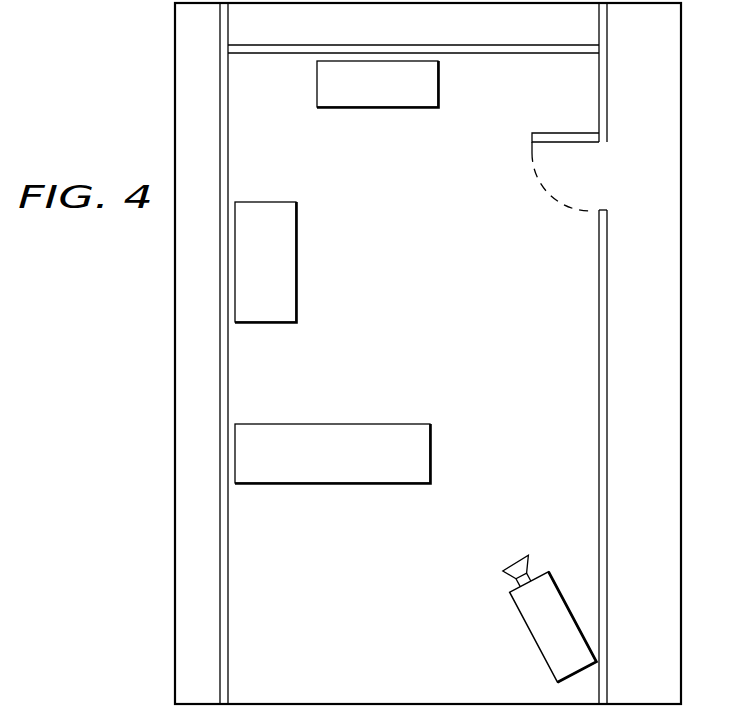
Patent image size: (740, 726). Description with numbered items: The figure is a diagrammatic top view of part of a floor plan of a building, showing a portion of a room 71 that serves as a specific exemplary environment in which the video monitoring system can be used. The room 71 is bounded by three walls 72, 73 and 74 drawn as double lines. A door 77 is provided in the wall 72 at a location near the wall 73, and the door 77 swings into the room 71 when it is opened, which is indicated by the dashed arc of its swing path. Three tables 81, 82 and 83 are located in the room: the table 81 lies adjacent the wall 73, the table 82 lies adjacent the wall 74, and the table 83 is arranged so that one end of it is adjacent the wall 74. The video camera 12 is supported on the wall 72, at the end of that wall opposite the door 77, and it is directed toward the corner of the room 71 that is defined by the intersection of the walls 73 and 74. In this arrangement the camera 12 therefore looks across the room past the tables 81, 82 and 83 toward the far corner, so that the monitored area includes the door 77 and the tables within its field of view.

The video camera 12 is at (533, 641).
The room 71 is at (424, 590).
The wall 72 is at (598, 410).
The wall 73 is at (270, 55).
The wall 74 is at (229, 373).
The door 77 is at (565, 133).
The table 81 is at (388, 108).
The table 82 is at (297, 273).
The table 83 is at (313, 486).